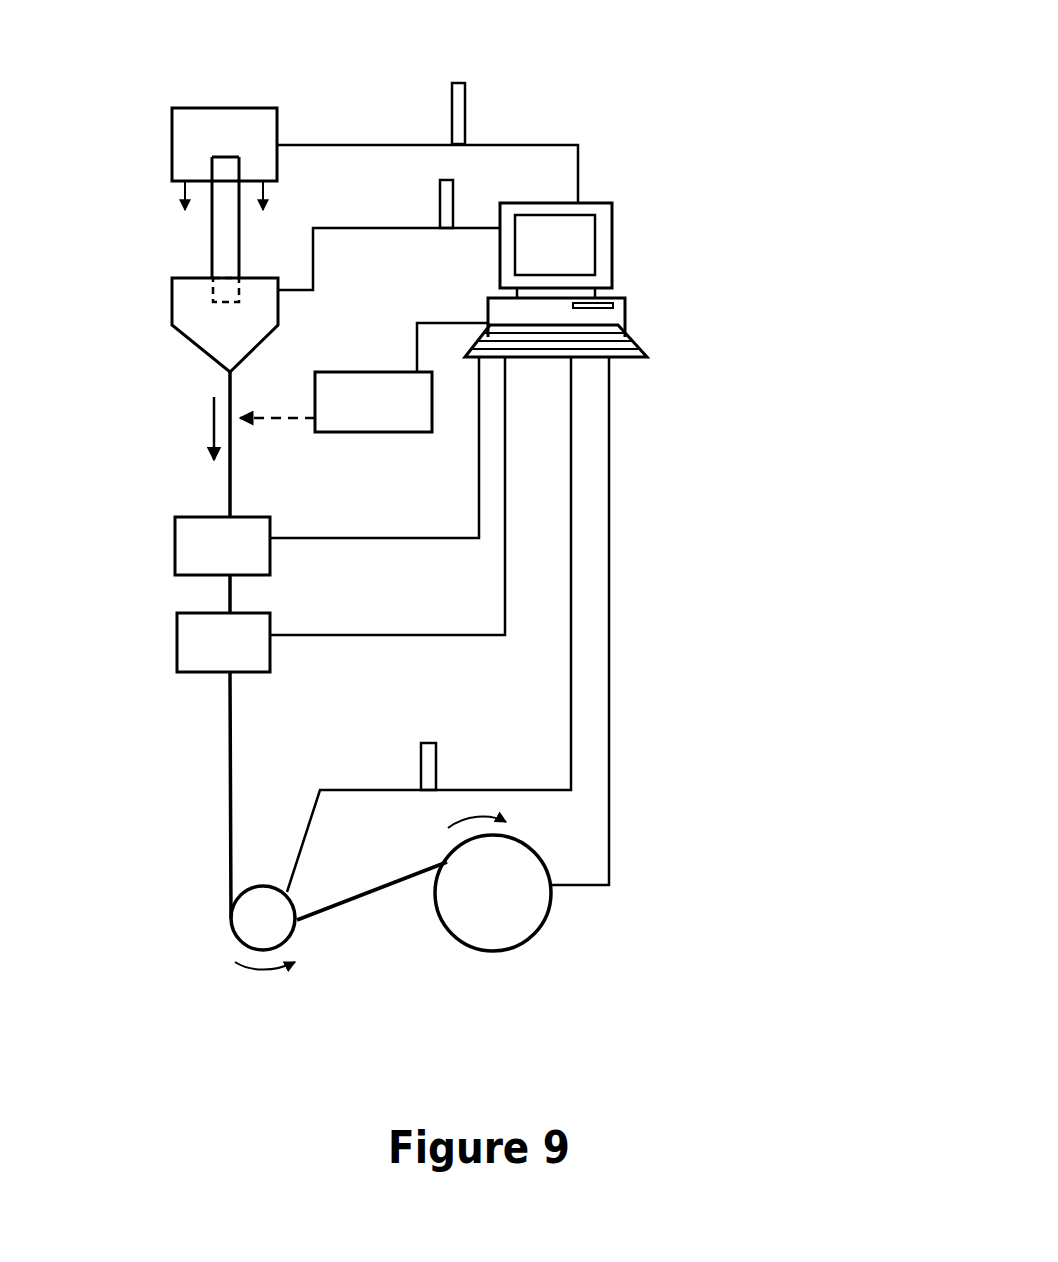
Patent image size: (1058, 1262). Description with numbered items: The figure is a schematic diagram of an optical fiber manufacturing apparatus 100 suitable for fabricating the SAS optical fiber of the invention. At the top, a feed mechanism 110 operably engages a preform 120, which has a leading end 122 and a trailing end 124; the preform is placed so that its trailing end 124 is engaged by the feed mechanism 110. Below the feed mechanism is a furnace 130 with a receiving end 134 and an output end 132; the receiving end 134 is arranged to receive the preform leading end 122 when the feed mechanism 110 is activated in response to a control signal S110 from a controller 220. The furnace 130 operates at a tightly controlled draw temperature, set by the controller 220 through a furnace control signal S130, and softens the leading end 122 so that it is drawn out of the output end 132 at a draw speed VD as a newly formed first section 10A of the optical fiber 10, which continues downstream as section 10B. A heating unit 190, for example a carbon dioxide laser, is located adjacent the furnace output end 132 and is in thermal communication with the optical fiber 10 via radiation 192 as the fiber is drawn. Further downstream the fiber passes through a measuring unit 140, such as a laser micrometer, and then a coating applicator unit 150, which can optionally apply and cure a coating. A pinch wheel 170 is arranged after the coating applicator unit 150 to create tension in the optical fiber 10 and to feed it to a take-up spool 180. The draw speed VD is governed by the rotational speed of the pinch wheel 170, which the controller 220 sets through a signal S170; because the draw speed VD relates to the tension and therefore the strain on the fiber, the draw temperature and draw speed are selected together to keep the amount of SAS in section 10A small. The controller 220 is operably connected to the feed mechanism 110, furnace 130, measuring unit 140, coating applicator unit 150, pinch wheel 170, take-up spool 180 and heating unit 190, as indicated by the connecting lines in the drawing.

The optical fiber manufacturing apparatus 100 is at (724, 68).
The feed mechanism 110 is at (263, 133).
The preform 120 is at (225, 242).
The trailing end 124 is at (226, 158).
The furnace 130 is at (187, 302).
The receiving end 134 is at (200, 277).
The leading end 122 is at (222, 305).
The output end 132 is at (228, 397).
The optical fiber 10 is at (231, 838).
The first section of optical fiber 10A is at (232, 397).
The downstream fiber portion 10B is at (232, 502).
The draw speed VD is at (208, 423).
The heating unit 190 is at (401, 377).
The radiation 192 is at (283, 422).
The measuring unit 140 is at (327, 466).
The coating applicator unit 150 is at (341, 514).
The control signal S110 is at (465, 104).
The furnace control signal S130 is at (453, 190).
The signal S170 is at (436, 765).
The controller 220 is at (612, 248).
The pinch wheel 170 is at (272, 935).
The take-up spool 180 is at (525, 910).